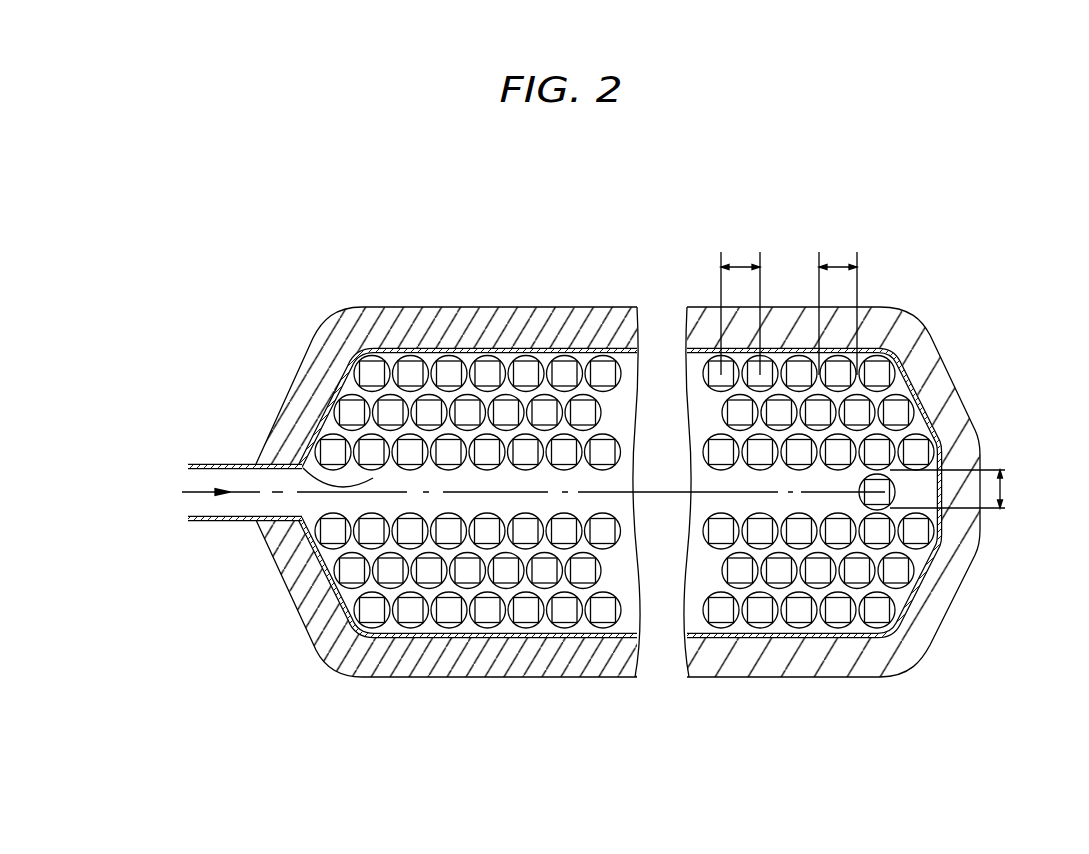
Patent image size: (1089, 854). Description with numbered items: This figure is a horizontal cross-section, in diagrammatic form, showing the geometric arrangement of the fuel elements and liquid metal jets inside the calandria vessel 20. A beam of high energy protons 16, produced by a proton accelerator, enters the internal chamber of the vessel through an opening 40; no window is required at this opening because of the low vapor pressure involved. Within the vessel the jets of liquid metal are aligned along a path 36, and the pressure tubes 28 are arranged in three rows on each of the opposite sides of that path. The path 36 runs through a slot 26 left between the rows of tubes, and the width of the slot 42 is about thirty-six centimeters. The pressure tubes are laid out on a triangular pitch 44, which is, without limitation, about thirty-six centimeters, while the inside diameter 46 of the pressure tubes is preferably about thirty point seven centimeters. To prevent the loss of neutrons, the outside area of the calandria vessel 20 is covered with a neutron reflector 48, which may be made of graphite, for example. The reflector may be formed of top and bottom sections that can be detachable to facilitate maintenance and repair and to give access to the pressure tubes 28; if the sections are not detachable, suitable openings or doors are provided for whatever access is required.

The beam of high energy protons 16 is at (235, 495).
The calandria vessel 20 is at (938, 543).
The slot 26 is at (302, 466).
The pressure tubes 28 is at (872, 345).
The path 36 is at (668, 492).
The opening 40 is at (298, 483).
The width of the slot 42 is at (1008, 492).
The triangular pitch of the pressure tubes 44 is at (738, 262).
The I.D. of the pressure tubes 46 is at (836, 262).
The neutron reflector 48 is at (877, 652).